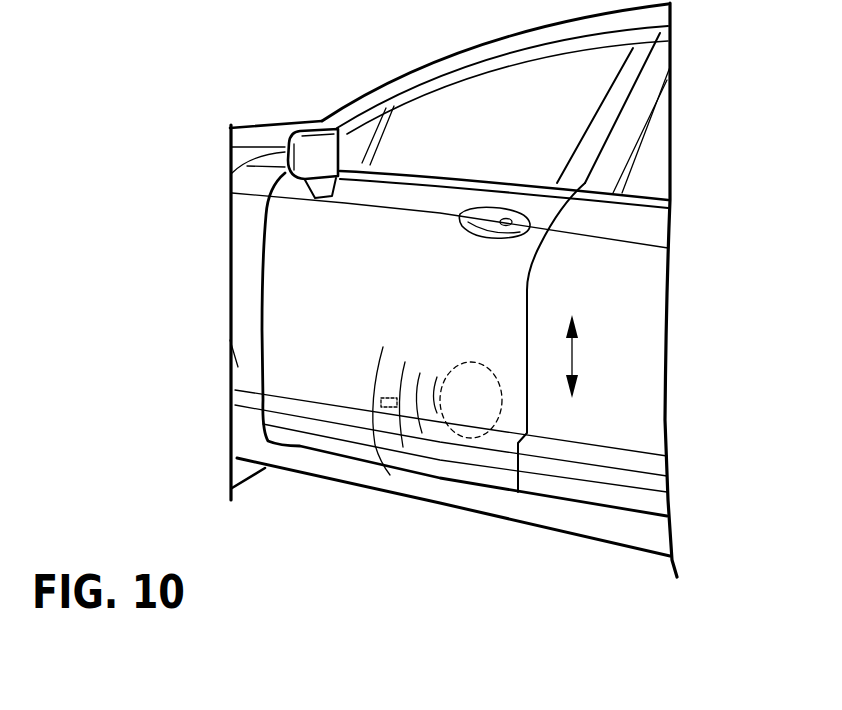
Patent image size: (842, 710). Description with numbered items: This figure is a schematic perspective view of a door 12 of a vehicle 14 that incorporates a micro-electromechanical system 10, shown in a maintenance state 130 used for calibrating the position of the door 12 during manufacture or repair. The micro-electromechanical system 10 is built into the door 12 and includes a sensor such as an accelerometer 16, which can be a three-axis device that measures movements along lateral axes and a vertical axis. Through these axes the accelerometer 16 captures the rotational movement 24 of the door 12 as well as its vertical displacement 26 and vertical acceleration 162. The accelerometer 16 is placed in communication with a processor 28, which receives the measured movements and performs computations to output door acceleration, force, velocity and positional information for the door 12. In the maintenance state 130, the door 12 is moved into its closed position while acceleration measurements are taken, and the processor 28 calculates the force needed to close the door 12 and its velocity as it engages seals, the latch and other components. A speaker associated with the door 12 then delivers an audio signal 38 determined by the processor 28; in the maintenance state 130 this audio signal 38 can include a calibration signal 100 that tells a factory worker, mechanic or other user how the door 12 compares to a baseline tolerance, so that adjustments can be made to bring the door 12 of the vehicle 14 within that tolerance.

The micro-electromechanical system 10 is at (489, 467).
The door 12 is at (293, 231).
The vehicle 14 is at (420, 52).
The accelerometer 16 is at (382, 410).
The rotational movement 24 is at (445, 481).
The vertical displacement 26 is at (575, 353).
The processor 28 is at (410, 410).
The audio signal 38 is at (376, 338).
The calibration signal 100 is at (350, 385).
The maintenance state 130 is at (680, 229).
The vertical acceleration 162 is at (590, 386).